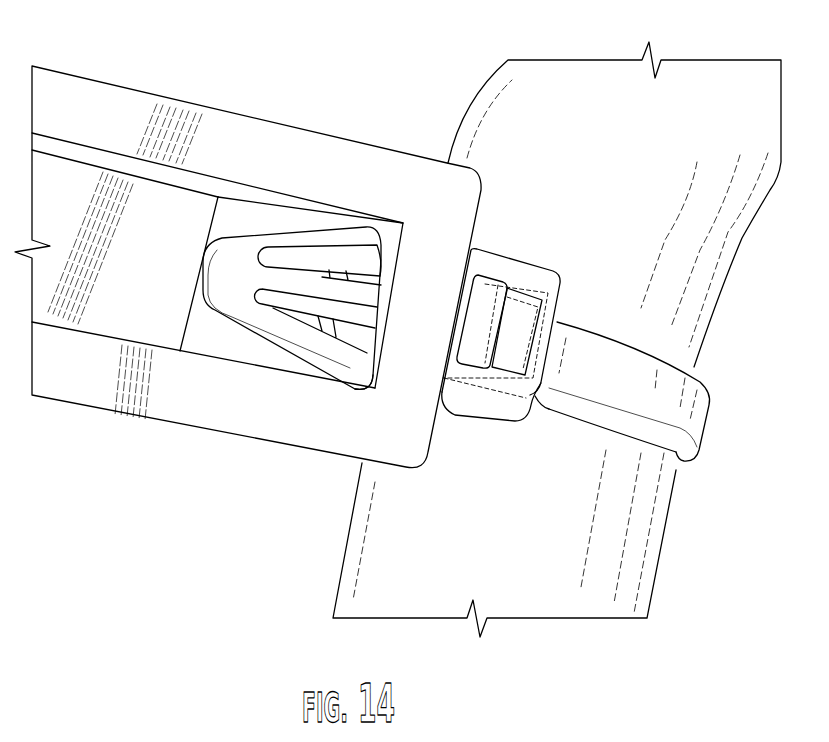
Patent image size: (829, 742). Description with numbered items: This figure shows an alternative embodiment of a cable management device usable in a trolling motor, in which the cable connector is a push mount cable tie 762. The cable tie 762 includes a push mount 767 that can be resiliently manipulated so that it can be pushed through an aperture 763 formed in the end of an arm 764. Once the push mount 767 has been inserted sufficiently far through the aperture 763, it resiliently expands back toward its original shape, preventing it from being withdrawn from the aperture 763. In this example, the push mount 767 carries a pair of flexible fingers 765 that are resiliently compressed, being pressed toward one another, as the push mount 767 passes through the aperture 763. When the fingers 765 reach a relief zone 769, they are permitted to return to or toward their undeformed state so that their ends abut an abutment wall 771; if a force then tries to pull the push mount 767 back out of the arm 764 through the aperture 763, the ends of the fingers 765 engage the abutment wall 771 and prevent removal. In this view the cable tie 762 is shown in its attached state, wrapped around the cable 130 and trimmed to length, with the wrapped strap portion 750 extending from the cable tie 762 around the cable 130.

The cable 130 is at (477, 122).
The strap 750 is at (516, 523).
The cable tie 762 is at (517, 273).
The aperture 763 is at (367, 267).
The arm 764 is at (90, 387).
The flexible fingers 765 is at (302, 248).
The push mount 767 is at (233, 270).
The relief zone 769 is at (283, 366).
The abutment wall 771 is at (368, 375).